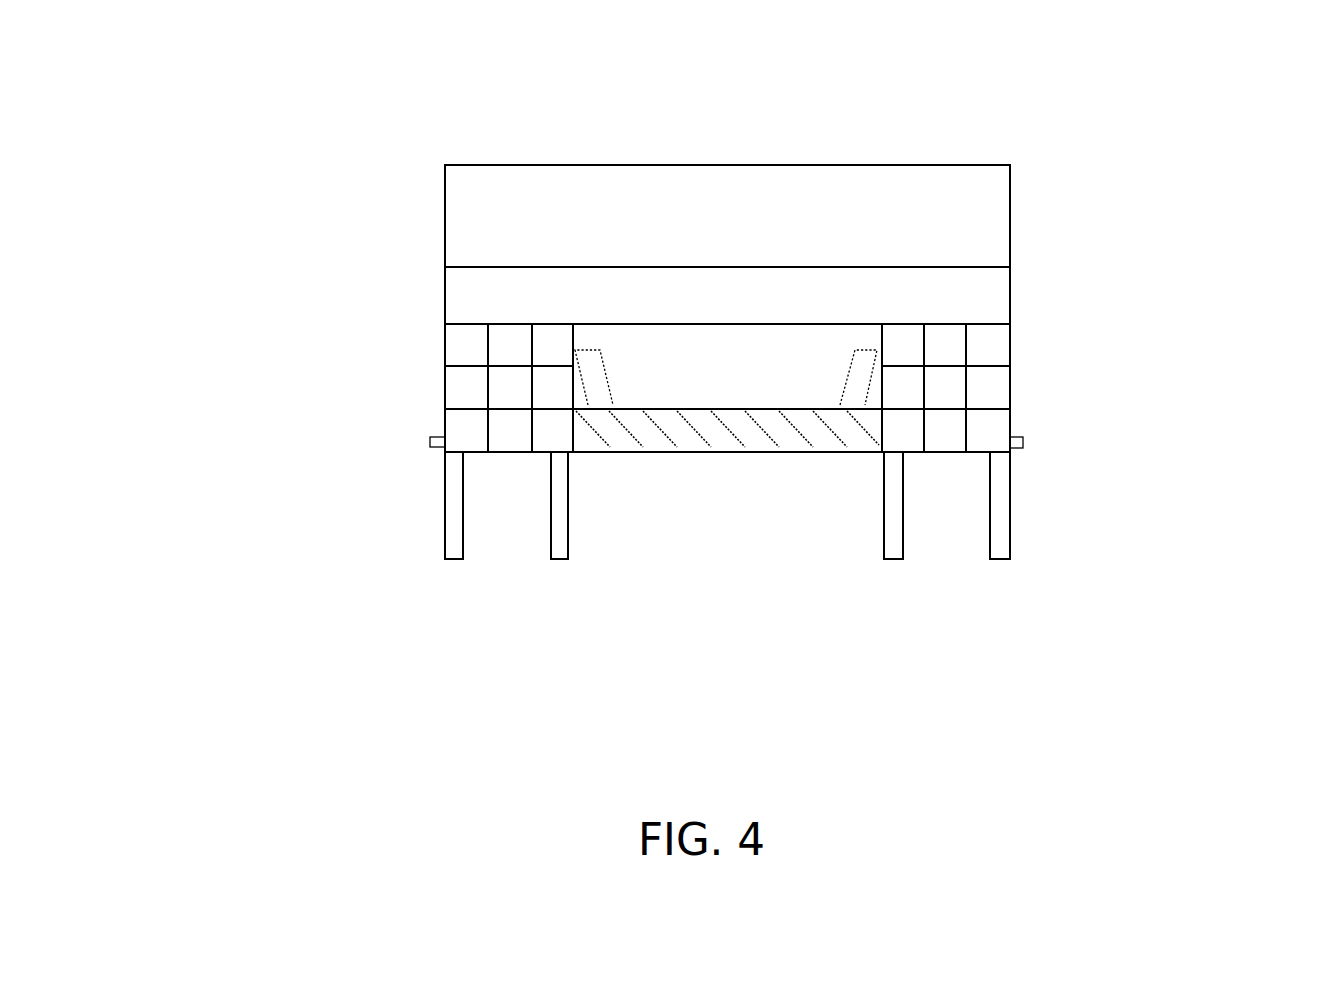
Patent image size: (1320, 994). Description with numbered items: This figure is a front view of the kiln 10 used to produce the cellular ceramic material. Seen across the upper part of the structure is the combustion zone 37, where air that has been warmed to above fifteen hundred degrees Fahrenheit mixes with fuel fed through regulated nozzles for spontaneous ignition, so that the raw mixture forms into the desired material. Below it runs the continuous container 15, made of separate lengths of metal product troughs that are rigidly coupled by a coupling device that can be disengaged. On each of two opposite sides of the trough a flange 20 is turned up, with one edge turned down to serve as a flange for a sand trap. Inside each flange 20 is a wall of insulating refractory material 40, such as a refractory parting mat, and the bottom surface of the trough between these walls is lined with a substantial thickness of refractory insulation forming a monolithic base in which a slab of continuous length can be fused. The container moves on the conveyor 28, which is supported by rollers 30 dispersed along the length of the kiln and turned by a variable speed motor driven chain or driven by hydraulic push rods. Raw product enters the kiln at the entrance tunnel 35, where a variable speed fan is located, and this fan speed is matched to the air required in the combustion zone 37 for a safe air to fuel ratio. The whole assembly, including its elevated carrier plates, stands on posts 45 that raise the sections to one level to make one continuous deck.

The kiln 10 is at (429, 188).
The continuous container 15 is at (727, 366).
The flange 20 is at (1098, 325).
The conveyor 28 is at (790, 438).
The rollers 30 is at (439, 445).
The entrance tunnel 35 is at (660, 462).
The combustion zone 37 is at (777, 188).
The insulating refractory material 40 is at (1090, 253).
The posts 45 is at (562, 538).